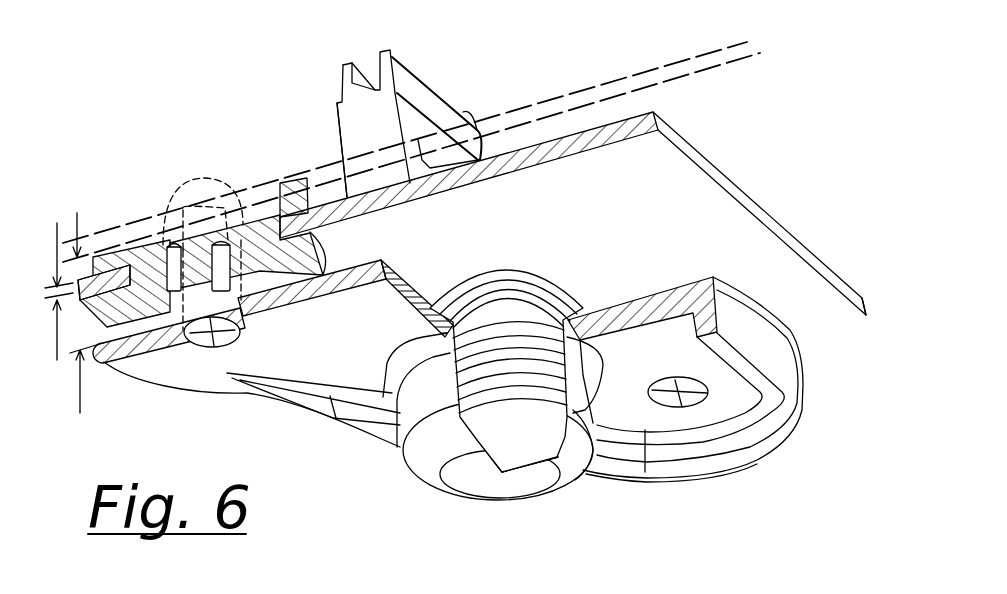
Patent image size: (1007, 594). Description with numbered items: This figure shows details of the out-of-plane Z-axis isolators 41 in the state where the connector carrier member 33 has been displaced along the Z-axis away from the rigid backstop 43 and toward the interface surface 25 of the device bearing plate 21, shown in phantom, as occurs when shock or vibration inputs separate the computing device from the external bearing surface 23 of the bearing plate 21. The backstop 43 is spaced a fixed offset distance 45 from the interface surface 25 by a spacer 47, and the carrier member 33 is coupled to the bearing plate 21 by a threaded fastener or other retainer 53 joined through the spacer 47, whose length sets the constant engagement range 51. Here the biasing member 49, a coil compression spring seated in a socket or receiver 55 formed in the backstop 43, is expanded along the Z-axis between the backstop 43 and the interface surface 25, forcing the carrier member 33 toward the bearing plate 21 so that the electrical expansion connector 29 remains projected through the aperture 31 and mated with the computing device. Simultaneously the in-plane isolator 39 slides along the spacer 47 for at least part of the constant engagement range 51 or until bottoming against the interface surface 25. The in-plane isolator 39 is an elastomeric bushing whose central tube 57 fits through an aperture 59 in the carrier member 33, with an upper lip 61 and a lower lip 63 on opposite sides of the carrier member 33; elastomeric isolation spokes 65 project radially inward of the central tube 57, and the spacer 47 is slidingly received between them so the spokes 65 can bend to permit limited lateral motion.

The device bearing plate 21 is at (777, 211).
The external bearing surface 23 is at (613, 80).
The interface surface 25 is at (678, 80).
The electrical expansion connector 29 is at (430, 95).
The aperture 31 is at (342, 168).
The connector carrier member 33 is at (671, 208).
The in-plane isolator 39 is at (773, 307).
The out-of-plane Z-axis isolator 41 is at (428, 455).
The rigid backstop 43 is at (357, 331).
The fixed offset distance 45 is at (84, 390).
The spacer 47 is at (170, 213).
The biasing member 49 is at (517, 400).
The constant engagement range 51 is at (61, 300).
The retainer 53 is at (203, 343).
The receiver 55 is at (444, 401).
The central tube 57 is at (160, 253).
The aperture 59 is at (270, 210).
The upper lip 61 is at (300, 180).
The lower lip 63 is at (320, 255).
The elastomeric isolation spoke 65 is at (217, 240).